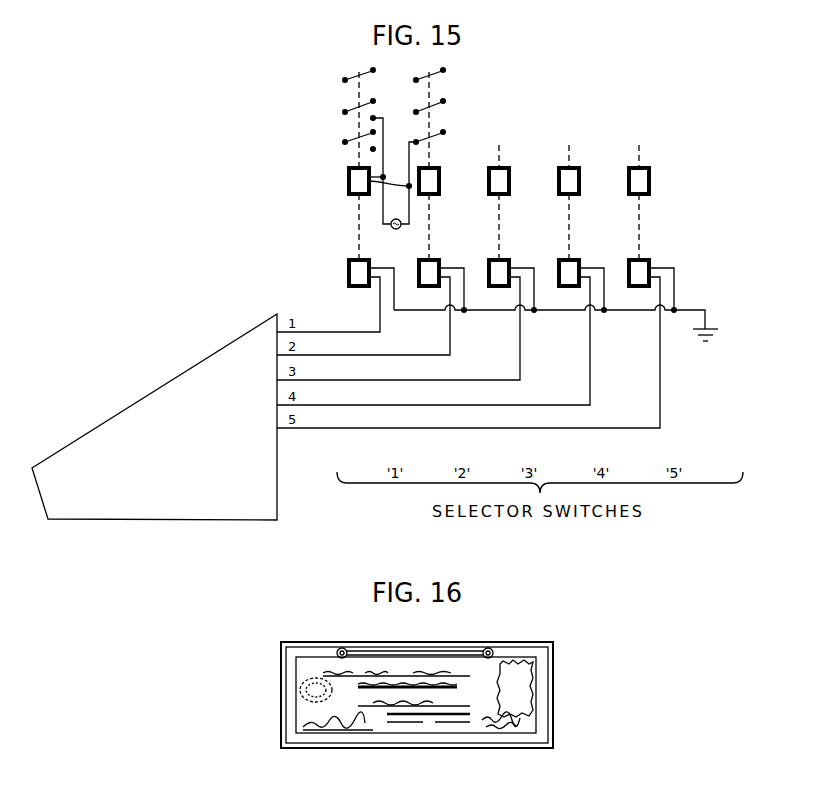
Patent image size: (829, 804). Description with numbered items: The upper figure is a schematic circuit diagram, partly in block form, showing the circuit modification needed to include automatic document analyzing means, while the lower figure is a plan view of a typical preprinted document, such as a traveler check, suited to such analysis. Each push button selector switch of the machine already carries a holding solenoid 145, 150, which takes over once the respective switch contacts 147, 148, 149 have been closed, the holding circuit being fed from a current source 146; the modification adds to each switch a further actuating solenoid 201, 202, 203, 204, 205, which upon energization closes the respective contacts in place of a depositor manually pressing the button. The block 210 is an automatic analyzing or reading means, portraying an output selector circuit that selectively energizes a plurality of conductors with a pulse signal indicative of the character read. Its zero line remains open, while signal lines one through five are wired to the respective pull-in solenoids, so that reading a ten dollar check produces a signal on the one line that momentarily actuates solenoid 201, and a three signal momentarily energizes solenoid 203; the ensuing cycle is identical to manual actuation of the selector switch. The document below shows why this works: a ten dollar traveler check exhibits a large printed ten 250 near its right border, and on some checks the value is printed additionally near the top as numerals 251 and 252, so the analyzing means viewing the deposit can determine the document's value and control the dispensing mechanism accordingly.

In FIG. 15, the holding solenoid 145 is at (349, 183).
In FIG. 15, the alternating current source 146 is at (394, 229).
In FIG. 15, the switch contact 147 is at (345, 142).
In FIG. 15, the switch contact 148 is at (345, 112).
In FIG. 15, the switch contact 149 is at (345, 82).
In FIG. 15, the holding solenoid 150 is at (489, 183).
In FIG. 15, the actuating solenoid 201 is at (349, 272).
In FIG. 15, the actuating solenoid 202 is at (419, 271).
In FIG. 15, the actuating solenoid 203 is at (489, 271).
In FIG. 15, the actuating solenoid 204 is at (559, 271).
In FIG. 15, the actuating solenoid 205 is at (629, 271).
In FIG. 15, the automatic analyzing or reading means 210 is at (185, 460).
In FIG. 16, the large printed value numeral 250 is at (526, 691).
In FIG. 16, the value numeral 251 is at (489, 648).
In FIG. 16, the value numeral 252 is at (344, 648).